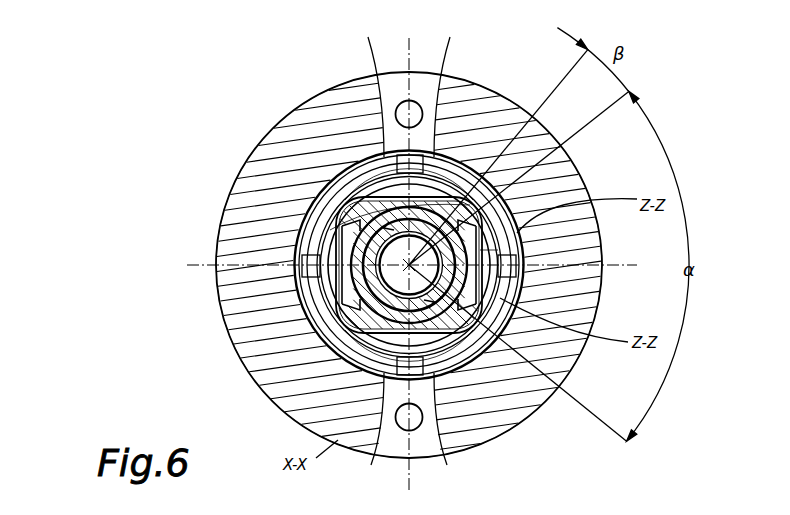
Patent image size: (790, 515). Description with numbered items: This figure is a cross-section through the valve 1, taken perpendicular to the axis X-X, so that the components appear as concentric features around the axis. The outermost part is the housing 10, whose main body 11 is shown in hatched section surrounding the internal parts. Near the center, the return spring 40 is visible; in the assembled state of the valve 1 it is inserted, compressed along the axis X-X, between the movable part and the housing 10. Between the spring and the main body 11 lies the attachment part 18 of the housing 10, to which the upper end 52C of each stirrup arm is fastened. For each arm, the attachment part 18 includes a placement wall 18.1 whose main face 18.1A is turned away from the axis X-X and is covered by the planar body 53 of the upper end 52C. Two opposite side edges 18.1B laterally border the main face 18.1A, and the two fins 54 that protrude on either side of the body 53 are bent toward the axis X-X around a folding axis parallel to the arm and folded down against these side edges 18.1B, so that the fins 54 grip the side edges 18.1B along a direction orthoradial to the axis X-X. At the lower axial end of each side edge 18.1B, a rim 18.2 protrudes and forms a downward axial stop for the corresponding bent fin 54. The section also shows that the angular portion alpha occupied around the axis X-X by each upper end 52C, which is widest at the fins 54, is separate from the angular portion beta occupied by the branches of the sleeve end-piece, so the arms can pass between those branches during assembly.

The valve 1 is at (273, 118).
The housing 10 is at (252, 390).
The main body 11 is at (270, 313).
The attachment part 18 is at (320, 220).
The placement wall 18.1 is at (488, 280).
The main face 18.1A is at (517, 250).
The side edges 18.1B is at (455, 228).
The rim 18.2 is at (409, 254).
The return spring 40 is at (330, 207).
The upper end 52C is at (338, 263).
The body 53 is at (470, 258).
The fins 54 is at (487, 225).